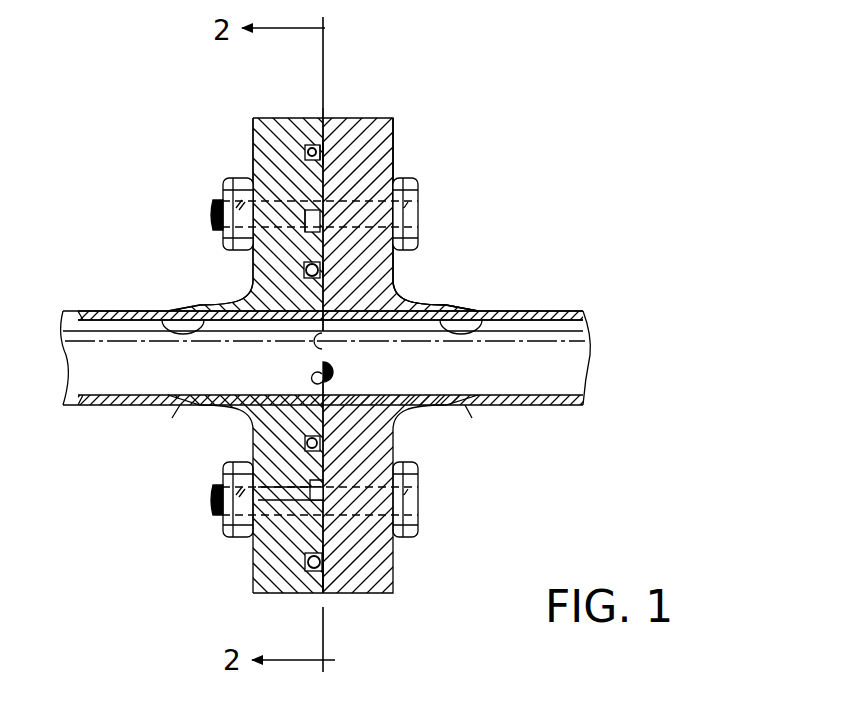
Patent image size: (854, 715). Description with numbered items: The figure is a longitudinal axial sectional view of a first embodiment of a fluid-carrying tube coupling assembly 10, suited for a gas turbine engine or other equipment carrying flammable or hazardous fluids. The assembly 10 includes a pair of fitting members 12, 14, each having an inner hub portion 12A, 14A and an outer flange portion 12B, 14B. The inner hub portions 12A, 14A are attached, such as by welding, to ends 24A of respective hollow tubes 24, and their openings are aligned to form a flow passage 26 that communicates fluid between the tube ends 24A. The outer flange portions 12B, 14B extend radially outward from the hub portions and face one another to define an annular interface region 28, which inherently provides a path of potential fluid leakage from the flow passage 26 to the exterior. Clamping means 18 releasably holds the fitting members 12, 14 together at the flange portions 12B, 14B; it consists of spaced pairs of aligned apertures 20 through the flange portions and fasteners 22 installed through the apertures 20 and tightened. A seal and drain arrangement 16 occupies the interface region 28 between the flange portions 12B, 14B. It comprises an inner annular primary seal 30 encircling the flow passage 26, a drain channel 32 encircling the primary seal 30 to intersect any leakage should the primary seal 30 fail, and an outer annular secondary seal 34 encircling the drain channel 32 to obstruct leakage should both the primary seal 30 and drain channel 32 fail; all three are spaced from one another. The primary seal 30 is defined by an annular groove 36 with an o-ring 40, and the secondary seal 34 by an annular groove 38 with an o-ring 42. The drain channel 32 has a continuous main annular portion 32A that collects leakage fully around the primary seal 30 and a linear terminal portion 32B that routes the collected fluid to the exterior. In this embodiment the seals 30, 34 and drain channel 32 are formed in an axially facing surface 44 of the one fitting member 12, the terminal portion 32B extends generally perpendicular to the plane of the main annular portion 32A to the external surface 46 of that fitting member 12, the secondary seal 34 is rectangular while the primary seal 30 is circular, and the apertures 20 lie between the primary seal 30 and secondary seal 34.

The tube coupling assembly 10 is at (494, 84).
The fitting member 12 is at (250, 134).
The inner hub portion 12A is at (240, 300).
The outer flange portion 12B is at (252, 172).
The fitting member 14 is at (396, 121).
The inner hub portion 14A is at (430, 300).
The outer flange portion 14B is at (426, 209).
The seal and drain arrangement 16 is at (279, 484).
The clamping means 18 is at (422, 497).
The alignable apertures 20 is at (320, 598).
The fasteners 22 is at (222, 208).
The hollow tubes 24 is at (533, 308).
The tube ends 24A is at (185, 410).
The flow passage 26 is at (160, 312).
The annular interface region 28 is at (334, 368).
The inner annular primary seal 30 is at (339, 270).
The drain channel 32 is at (342, 221).
The main annular portion 32A is at (300, 162).
The linear terminal portion 32B is at (265, 540).
The outer annular secondary seal 34 is at (336, 152).
The annular groove 36 is at (393, 432).
The annular groove 38 is at (312, 148).
The annular o-ring 40 is at (300, 268).
The annular o-ring 42 is at (325, 148).
The axially facing surface 44 is at (323, 342).
The external surface 46 is at (225, 470).